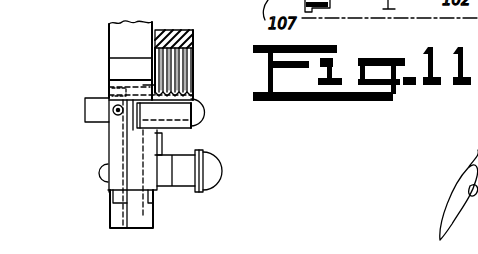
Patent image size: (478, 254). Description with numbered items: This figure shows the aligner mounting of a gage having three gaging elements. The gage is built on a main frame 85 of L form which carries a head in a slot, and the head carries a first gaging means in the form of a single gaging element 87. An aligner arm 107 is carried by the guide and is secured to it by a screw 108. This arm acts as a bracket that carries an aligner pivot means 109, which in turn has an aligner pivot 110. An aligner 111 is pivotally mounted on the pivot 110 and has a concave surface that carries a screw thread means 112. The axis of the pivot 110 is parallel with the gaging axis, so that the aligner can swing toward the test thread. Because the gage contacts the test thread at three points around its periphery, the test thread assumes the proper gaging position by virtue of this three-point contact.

The main frame 85 is at (118, 41).
The gaging element 87 is at (208, 182).
The aligner arm 107 is at (115, 152).
The screw 108 is at (100, 179).
The aligner pivot means 109 is at (104, 112).
The aligner pivot 110 is at (180, 127).
The aligner 111 is at (177, 29).
The screw thread means 112 is at (189, 62).